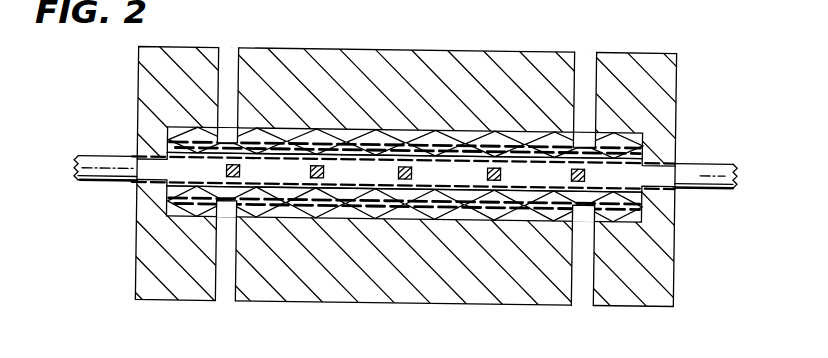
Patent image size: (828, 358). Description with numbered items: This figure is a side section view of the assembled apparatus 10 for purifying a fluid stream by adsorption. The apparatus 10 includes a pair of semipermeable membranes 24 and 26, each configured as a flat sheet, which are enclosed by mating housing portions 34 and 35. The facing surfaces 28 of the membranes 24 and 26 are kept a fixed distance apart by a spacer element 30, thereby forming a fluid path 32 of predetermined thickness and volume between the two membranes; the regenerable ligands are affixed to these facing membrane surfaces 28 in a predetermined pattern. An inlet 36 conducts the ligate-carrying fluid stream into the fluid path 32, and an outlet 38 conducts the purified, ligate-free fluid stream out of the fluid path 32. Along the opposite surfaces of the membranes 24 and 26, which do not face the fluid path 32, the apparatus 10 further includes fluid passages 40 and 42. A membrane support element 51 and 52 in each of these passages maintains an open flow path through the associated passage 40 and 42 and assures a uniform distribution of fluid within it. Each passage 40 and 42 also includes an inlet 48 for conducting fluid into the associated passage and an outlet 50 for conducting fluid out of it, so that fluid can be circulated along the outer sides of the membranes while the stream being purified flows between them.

The apparatus 10 is at (682, 30).
The semipermeable membrane 24 is at (632, 160).
The semipermeable membrane 26 is at (652, 200).
The facing surfaces 28 is at (519, 160).
The spacer element 30 is at (425, 152).
The fluid path 32 is at (270, 165).
The housing portion 34 is at (161, 106).
The housing portion 35 is at (136, 268).
The inlet 36 is at (120, 181).
The outlet 38 is at (702, 190).
The fluid passage 40 is at (338, 152).
The fluid passage 42 is at (346, 196).
The inlet 48 is at (213, 87).
The outlet 50 is at (606, 82).
The membrane support element 51 is at (413, 172).
The membrane support element 52 is at (383, 206).